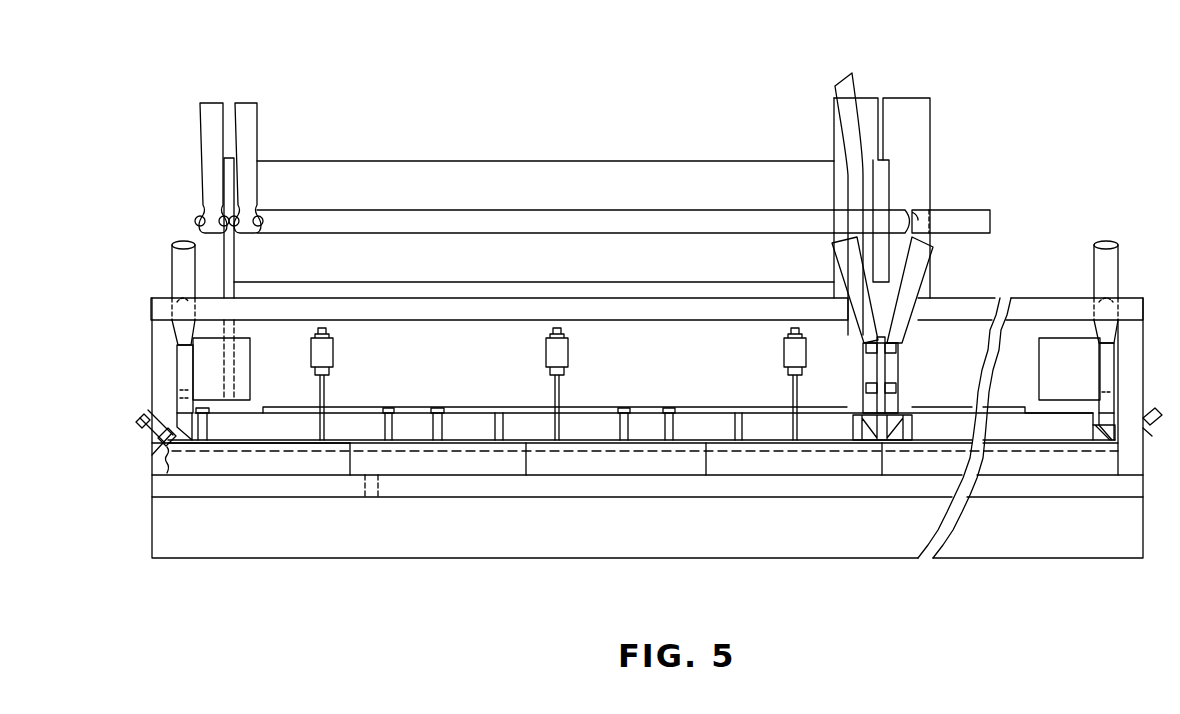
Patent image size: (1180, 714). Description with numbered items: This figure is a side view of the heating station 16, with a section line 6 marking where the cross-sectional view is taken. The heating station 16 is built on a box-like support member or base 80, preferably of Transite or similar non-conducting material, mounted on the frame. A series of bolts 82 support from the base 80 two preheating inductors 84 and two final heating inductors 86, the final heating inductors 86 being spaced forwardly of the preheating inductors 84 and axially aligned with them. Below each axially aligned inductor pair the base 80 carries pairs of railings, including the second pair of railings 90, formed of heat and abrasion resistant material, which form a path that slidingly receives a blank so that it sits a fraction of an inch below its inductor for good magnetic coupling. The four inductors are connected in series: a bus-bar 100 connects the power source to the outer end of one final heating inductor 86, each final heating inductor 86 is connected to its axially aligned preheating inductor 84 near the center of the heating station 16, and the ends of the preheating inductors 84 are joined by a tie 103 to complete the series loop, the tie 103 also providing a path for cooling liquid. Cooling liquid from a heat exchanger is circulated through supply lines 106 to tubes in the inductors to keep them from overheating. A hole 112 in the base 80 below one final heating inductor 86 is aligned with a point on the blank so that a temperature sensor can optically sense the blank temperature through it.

The section line 6- 6 is at (104, 155).
The heating station 16 is at (638, 100).
The base 80 is at (903, 557).
The bolts 82 is at (325, 392).
The preheating inductors 84 is at (1038, 440).
The final heating inductors 86 is at (408, 415).
The second pair of railings 90 is at (262, 450).
The bus-bar 100 is at (445, 161).
The tie 103 is at (1099, 375).
The supply lines 106 is at (258, 103).
The hole 112 is at (377, 497).